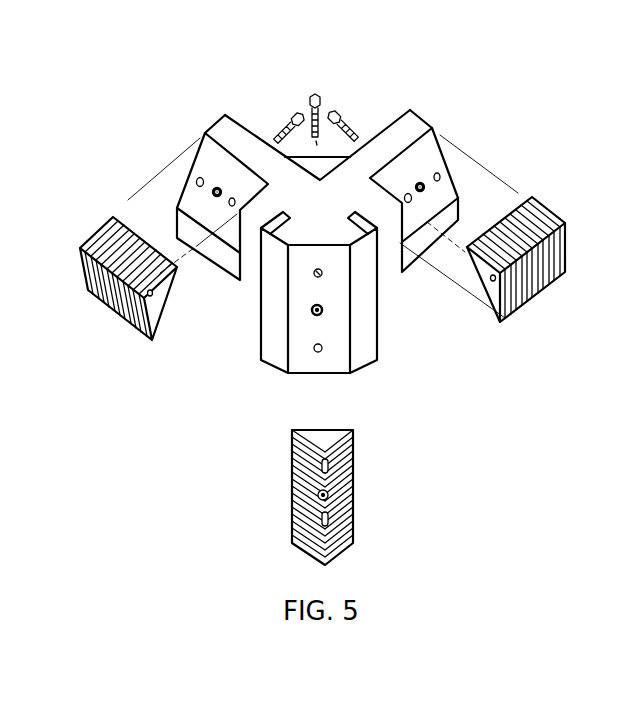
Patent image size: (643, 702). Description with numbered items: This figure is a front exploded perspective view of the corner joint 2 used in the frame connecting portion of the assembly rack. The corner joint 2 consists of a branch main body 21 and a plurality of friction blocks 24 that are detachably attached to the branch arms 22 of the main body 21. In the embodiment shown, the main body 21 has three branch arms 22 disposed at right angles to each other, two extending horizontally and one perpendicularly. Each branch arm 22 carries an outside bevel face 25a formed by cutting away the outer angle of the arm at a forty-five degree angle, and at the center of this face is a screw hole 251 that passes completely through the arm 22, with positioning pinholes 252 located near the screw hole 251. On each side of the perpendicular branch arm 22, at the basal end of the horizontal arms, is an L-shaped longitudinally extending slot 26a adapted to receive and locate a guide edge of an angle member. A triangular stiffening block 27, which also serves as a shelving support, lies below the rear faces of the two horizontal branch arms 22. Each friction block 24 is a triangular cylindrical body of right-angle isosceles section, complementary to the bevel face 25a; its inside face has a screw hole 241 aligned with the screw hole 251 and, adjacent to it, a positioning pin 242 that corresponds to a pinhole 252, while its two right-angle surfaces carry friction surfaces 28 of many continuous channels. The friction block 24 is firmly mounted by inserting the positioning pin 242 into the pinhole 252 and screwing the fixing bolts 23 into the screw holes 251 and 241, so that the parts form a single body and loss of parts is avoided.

The corner joint 2 is at (262, 118).
The branch main body 21 is at (318, 215).
The branch arm 22 is at (237, 138).
The fixing bolt 23 is at (350, 110).
The friction block 24 is at (118, 310).
The outside bevel face 25a is at (212, 166).
The L-shaped longitudinally extending slot 26a is at (258, 262).
The triangular stiffening block 27 is at (318, 162).
The friction surface 28 is at (133, 313).
The screw hole 241 is at (92, 283).
The positioning pin 242 is at (173, 298).
The screw hole 251 is at (214, 192).
The positioning pinhole 252 is at (228, 202).